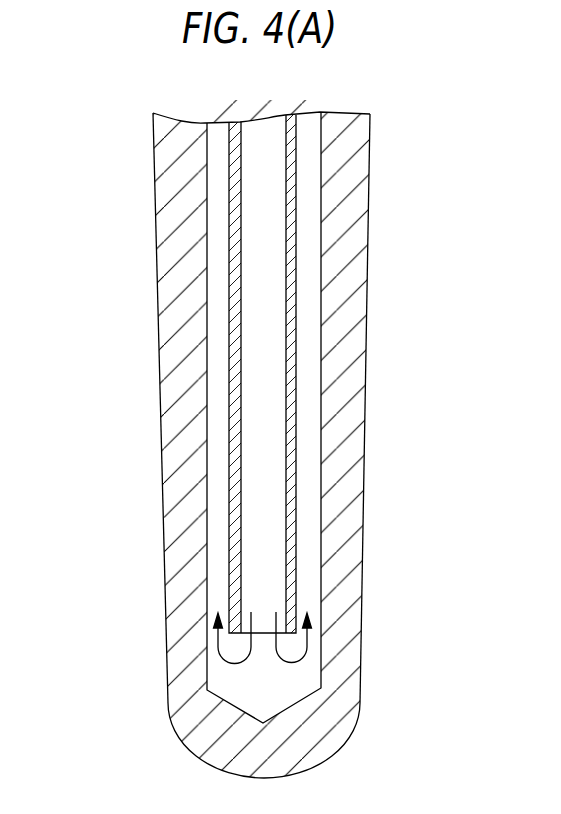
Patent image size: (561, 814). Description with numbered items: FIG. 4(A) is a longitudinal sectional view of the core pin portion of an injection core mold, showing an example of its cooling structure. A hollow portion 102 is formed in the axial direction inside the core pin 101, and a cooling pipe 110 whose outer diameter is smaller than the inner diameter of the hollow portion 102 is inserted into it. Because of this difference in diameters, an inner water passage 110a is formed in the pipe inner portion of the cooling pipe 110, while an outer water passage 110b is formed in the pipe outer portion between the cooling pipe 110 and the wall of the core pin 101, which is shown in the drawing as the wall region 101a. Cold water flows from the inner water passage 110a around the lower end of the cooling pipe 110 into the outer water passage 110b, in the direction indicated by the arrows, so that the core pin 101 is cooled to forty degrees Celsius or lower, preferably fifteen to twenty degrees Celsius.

The core pin 101 is at (258, 439).
The vessel wall 101a is at (363, 398).
The hollow portion 102 is at (310, 191).
The cooling pipe 110 is at (335, 389).
The inner water passage 110a is at (274, 293).
The outer water passage 110b is at (313, 465).